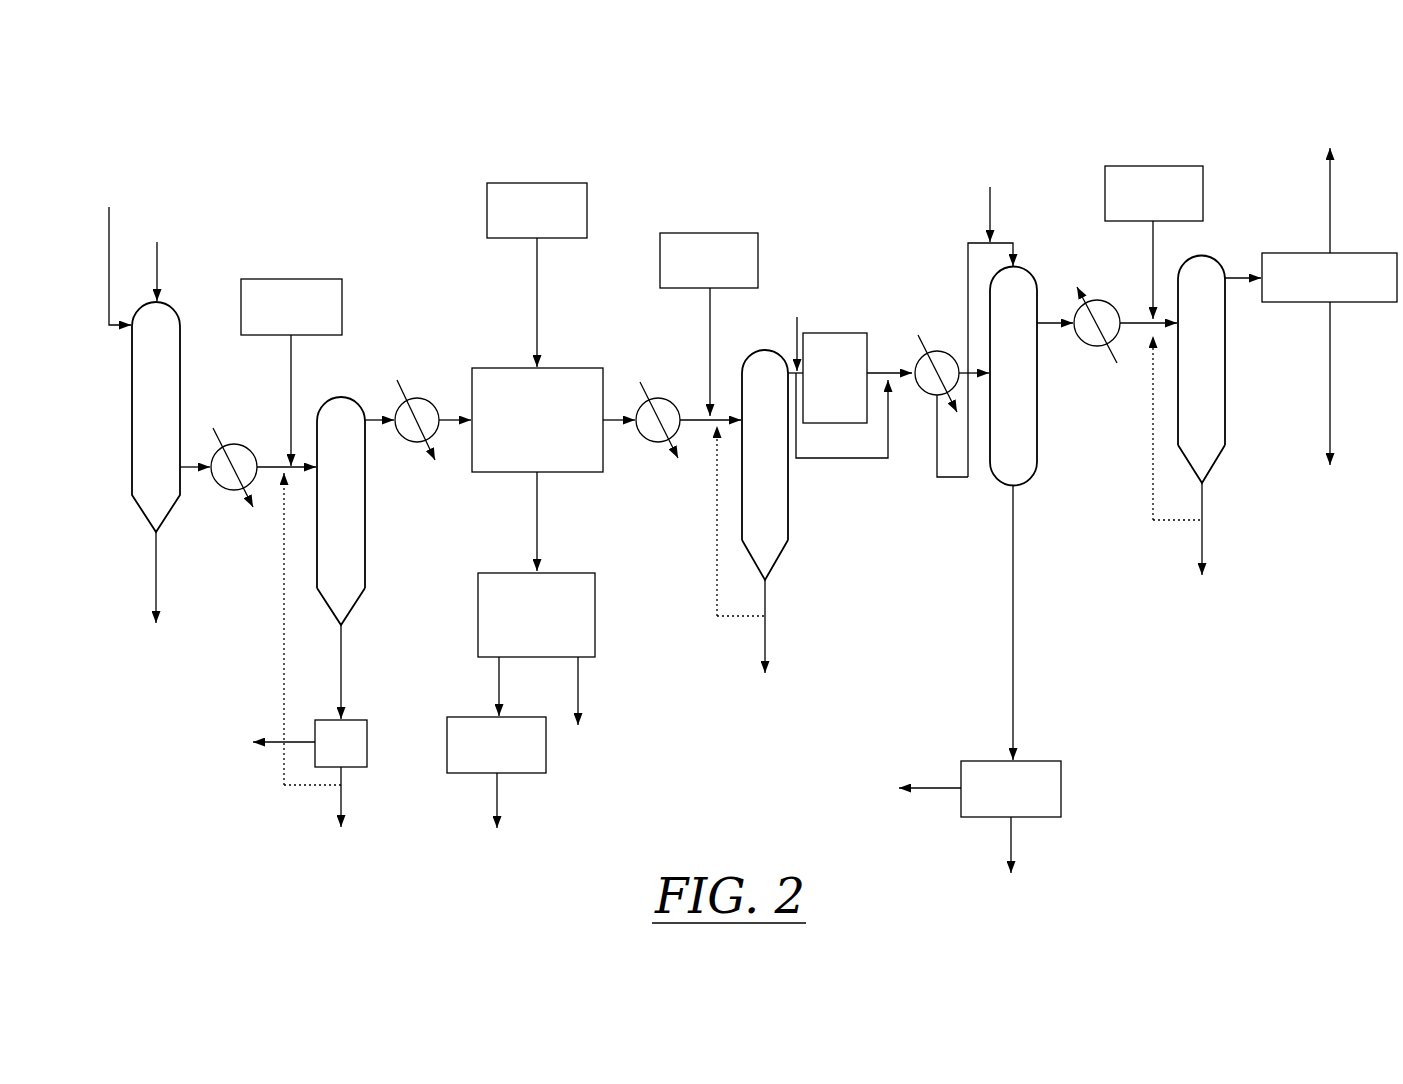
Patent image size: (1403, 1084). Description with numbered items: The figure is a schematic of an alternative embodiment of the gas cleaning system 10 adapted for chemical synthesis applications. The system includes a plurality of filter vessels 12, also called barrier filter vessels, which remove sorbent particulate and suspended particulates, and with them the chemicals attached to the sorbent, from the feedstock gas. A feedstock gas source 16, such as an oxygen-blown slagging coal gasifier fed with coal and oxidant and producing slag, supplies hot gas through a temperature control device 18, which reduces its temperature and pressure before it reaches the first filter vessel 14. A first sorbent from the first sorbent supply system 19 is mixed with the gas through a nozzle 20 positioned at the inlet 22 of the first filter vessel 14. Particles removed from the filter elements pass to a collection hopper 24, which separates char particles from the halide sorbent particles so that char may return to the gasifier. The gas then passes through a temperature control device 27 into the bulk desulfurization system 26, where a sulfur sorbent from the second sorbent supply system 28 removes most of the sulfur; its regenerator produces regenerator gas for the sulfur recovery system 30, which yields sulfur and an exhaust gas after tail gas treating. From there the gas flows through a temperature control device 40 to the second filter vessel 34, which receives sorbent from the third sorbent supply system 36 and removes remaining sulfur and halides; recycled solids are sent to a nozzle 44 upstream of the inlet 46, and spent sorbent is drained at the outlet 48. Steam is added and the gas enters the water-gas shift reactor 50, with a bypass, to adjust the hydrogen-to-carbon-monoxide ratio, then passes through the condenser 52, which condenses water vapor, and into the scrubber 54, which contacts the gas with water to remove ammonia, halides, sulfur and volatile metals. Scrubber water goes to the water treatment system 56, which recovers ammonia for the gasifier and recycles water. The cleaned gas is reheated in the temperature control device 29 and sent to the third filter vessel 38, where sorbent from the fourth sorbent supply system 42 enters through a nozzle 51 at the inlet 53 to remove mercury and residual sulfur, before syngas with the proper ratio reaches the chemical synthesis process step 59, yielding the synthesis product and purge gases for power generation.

The gas cleaning system 10 is at (463, 180).
The filter vessel 12 is at (373, 518).
The first filter vessel 14 is at (307, 390).
The feedstock gas source 16 is at (180, 372).
The temperature control device 18 is at (219, 484).
The first sorbent supply system 19 is at (342, 307).
The nozzle 20 is at (283, 480).
The inlet 22 is at (317, 470).
The collection hopper 24 is at (367, 757).
The bulk desulfurization system 26 is at (582, 368).
The temperature control device 27 is at (415, 397).
The second sorbent supply system 28 is at (587, 212).
The temperature control device 29 is at (1092, 346).
The sulfur recovery system 30 is at (595, 612).
The second filter vessel 34 is at (740, 487).
The third sorbent supply system 36 is at (758, 260).
The third filter vessel 38 is at (1225, 380).
The temperature control device 40 is at (658, 397).
The fourth sorbent supply system 42 is at (1105, 202).
The nozzle 44 is at (727, 423).
The inlet 46 is at (730, 417).
The outlet 48 is at (765, 582).
The water-gas shift reactor 50 is at (842, 333).
The nozzle 51 is at (1165, 320).
The condenser 52 is at (925, 397).
The inlet 53 is at (1176, 343).
The scrubber 54 is at (1027, 483).
The water treatment system 56 is at (1062, 780).
The chemical synthesis process step 59 is at (1373, 302).